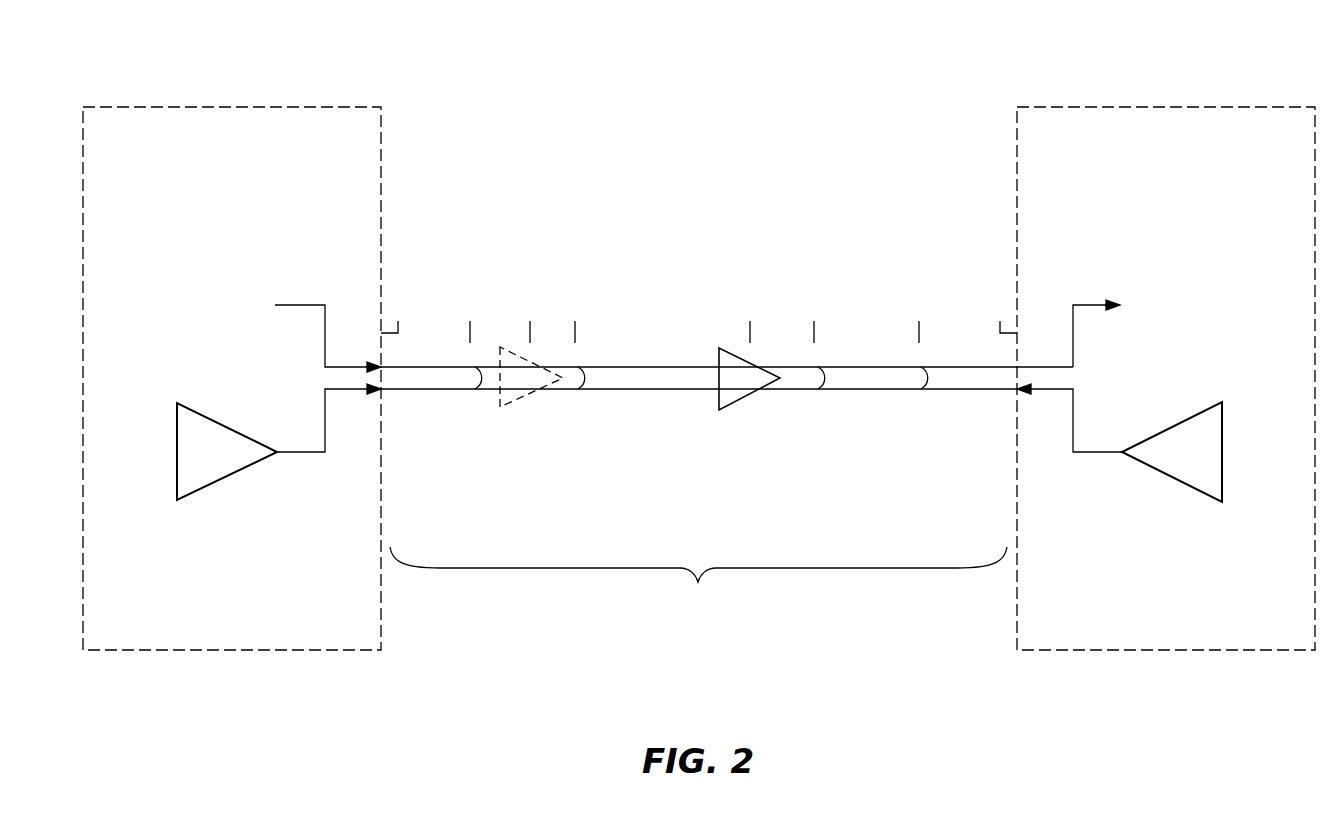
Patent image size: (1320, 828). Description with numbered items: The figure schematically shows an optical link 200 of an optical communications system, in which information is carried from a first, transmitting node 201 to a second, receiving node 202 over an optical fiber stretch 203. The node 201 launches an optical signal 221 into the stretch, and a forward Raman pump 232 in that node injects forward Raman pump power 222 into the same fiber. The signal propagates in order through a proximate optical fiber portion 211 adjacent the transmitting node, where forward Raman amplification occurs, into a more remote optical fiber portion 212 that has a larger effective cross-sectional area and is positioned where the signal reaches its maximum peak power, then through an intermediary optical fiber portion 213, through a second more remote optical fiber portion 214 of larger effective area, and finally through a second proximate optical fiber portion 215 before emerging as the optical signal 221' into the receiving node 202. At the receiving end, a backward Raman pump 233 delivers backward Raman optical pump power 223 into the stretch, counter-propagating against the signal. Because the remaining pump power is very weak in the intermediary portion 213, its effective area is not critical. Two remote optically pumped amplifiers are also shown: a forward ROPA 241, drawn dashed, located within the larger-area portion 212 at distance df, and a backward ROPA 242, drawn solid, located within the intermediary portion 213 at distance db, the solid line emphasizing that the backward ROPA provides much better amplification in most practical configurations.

The optical link 200 is at (699, 328).
The first node 201 is at (232, 378).
The second node 202 is at (1166, 378).
The optical fiber stretch 203 is at (698, 593).
The proximate optical fiber portion 211 is at (441, 392).
The more remote optical fiber portion 212 is at (563, 392).
The intermediary optical fiber portion 213 is at (697, 366).
The second more remote optical fiber portion 214 is at (856, 392).
The second proximate optical fiber portion 215 is at (966, 392).
The optical signal 221 is at (328, 297).
The optical signal 221' is at (1122, 295).
The forward Raman pump power 222 is at (300, 452).
The backward Raman optical pump power 223 is at (1097, 452).
The forward Raman pump 232 is at (190, 540).
The backward Raman pump 233 is at (1207, 542).
The forward ROPA 241 is at (530, 362).
The backward ROPA 242 is at (738, 397).